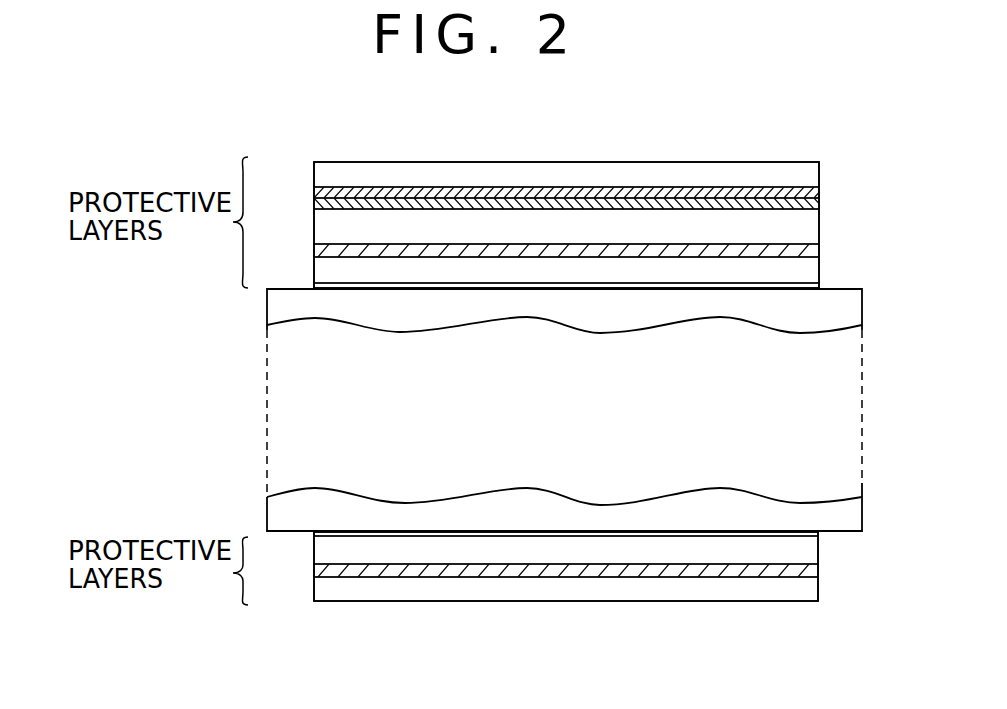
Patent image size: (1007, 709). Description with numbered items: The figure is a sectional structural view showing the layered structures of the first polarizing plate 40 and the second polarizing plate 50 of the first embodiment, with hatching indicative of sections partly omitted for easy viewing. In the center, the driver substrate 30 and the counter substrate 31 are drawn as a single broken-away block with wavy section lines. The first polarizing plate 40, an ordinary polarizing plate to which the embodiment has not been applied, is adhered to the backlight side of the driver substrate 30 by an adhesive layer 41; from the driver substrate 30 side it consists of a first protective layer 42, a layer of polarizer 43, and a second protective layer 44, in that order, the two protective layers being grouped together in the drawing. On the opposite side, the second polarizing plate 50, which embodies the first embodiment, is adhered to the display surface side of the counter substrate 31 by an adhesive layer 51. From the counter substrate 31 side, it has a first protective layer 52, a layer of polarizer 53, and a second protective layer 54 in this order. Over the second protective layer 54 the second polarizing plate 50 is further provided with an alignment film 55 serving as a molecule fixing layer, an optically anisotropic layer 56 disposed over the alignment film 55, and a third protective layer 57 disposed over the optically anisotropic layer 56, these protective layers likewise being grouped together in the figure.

The driver substrate 30 is at (278, 515).
The counter substrate 31 is at (278, 312).
The first polarizing plate 40 is at (823, 625).
The adhesive layer 41 is at (818, 534).
The first protective layer 42 is at (322, 554).
The polarizer 43 is at (816, 571).
The second protective layer 44 is at (322, 591).
The second polarizing plate 50 is at (823, 148).
The adhesive layer 51 is at (818, 287).
The first protective layer 52 is at (322, 269).
The polarizer 53 is at (815, 250).
The second protective layer 54 is at (322, 227).
The alignment film 55 is at (815, 206).
The optically anisotropic layer 56 is at (815, 192).
The third protective layer 57 is at (322, 177).